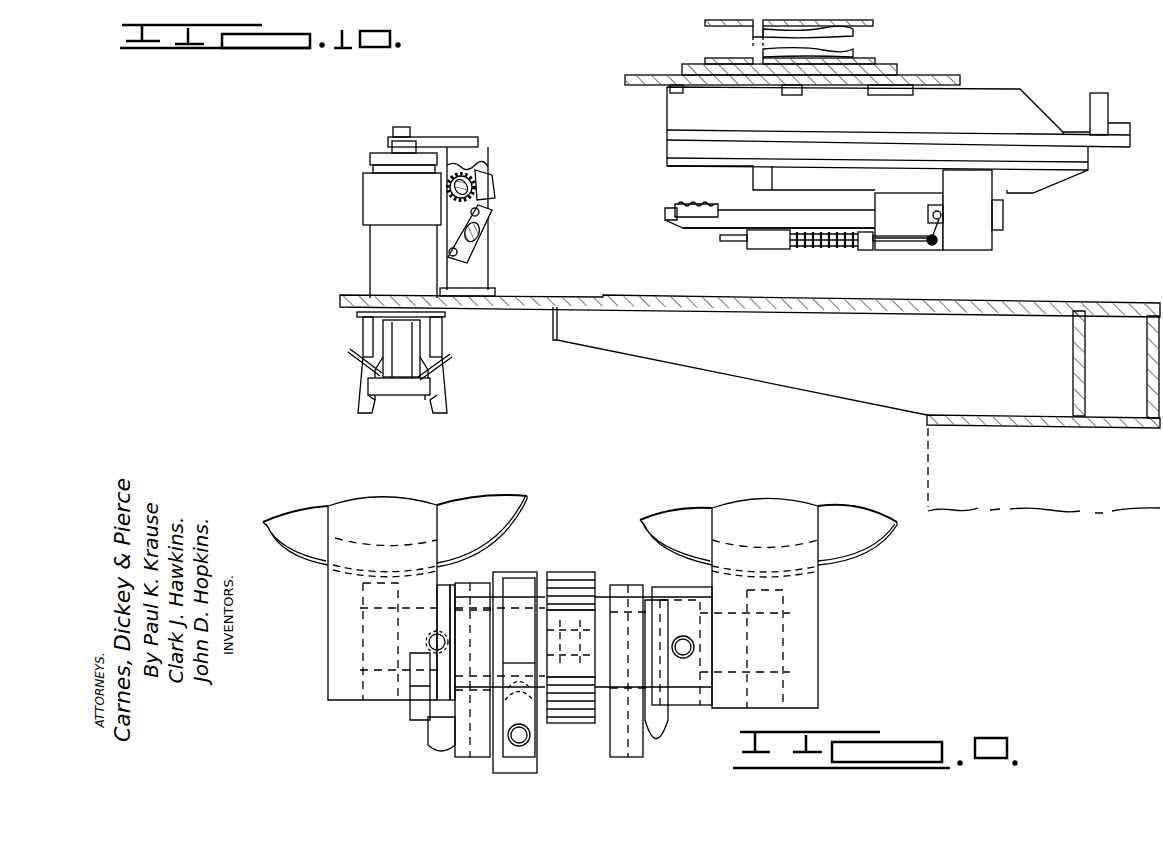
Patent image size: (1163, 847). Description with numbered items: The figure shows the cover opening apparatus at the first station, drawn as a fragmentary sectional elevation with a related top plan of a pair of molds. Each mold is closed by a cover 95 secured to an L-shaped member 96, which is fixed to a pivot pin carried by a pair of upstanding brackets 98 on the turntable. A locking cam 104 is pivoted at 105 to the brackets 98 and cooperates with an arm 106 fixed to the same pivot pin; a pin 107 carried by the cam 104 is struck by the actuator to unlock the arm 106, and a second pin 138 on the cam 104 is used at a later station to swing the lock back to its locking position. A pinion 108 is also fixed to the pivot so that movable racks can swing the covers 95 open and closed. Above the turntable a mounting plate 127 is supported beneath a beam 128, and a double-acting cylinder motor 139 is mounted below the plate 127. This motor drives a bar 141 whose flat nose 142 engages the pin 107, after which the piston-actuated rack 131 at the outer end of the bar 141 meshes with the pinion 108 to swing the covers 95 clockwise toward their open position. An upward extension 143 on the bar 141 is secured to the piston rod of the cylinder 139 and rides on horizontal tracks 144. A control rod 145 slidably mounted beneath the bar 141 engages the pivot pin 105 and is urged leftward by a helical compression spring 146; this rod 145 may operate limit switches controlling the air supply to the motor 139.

In FIG. 10, the cover 95 is at (370, 150).
In FIG. 9, the cover 95 is at (290, 550).
In FIG. 10, the L-shaped member 96 is at (468, 152).
In FIG. 9, the L-shaped member 96 is at (340, 578).
In FIG. 10, the upstanding brackets 98 is at (448, 272).
In FIG. 9, the upstanding brackets 98 is at (468, 745).
In FIG. 10, the locking cam 104 is at (490, 220).
In FIG. 9, the locking cam 104 is at (512, 760).
In FIG. 10, the pivot pin 105 is at (478, 262).
In FIG. 10, the arm 106 is at (488, 186).
In FIG. 9, the arm 106 is at (514, 585).
In FIG. 10, the pin 107 is at (480, 210).
In FIG. 9, the pin 107 is at (540, 725).
In FIG. 10, the pinion 108 is at (485, 178).
In FIG. 9, the pinion 108 is at (572, 580).
In FIG. 10, the pin 138 is at (449, 252).
In FIG. 9, the pin 138 is at (571, 642).
In FIG. 10, the mounting plate 127 is at (937, 75).
In FIG. 10, the beam 128 is at (852, 55).
In FIG. 10, the piston-actuated rack 131 is at (692, 203).
In FIG. 10, the double-acting cylinder motor 139 is at (1055, 100).
In FIG. 10, the bar 141 is at (720, 225).
In FIG. 10, the flat nose 142 is at (672, 210).
In FIG. 10, the upward extension 143 is at (770, 198).
In FIG. 10, the horizontal tracks 144 is at (1060, 155).
In FIG. 10, the control rod 145 is at (740, 243).
In FIG. 10, the helical compression spring 146 is at (816, 248).